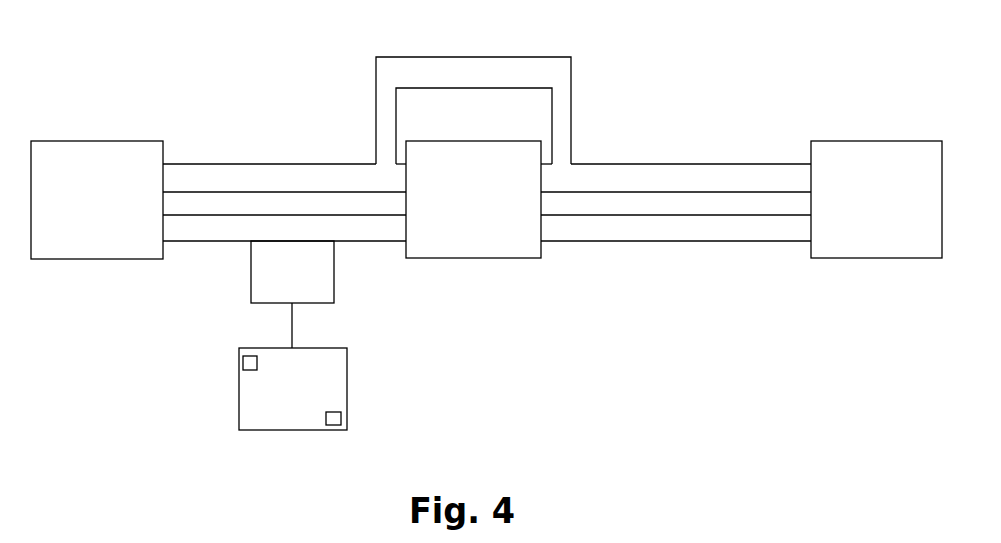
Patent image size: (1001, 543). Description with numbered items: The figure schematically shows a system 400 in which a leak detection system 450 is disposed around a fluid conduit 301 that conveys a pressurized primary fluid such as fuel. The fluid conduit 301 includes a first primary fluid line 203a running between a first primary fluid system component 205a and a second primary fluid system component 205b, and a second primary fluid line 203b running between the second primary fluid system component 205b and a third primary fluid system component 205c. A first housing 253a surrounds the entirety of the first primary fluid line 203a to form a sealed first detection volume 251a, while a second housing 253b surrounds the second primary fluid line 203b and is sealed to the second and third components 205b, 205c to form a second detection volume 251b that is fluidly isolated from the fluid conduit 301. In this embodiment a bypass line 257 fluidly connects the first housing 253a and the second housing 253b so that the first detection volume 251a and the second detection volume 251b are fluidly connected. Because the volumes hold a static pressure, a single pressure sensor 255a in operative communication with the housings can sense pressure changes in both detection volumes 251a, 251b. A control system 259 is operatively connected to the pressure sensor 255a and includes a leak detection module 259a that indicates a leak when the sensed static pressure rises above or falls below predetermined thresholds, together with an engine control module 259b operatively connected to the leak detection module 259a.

The system 400 is at (52, 54).
The first primary fluid system component 205a is at (76, 141).
The second primary fluid system component 205b is at (452, 141).
The third primary fluid system component 205c is at (868, 141).
The first detection volume 251a is at (173, 173).
The second detection volume 251b is at (793, 176).
The first primary fluid line 203a is at (237, 207).
The second primary fluid line 203b is at (584, 205).
The first housing 253a is at (359, 164).
The second housing 253b is at (698, 164).
The bypass line 257 is at (433, 57).
The fluid conduit 301 is at (177, 217).
The pressure sensor 255a is at (334, 282).
The control system 259 is at (275, 433).
The leak detection module 259a is at (345, 417).
The engine control module 259b is at (243, 362).
The leak detection system 450 is at (218, 406).